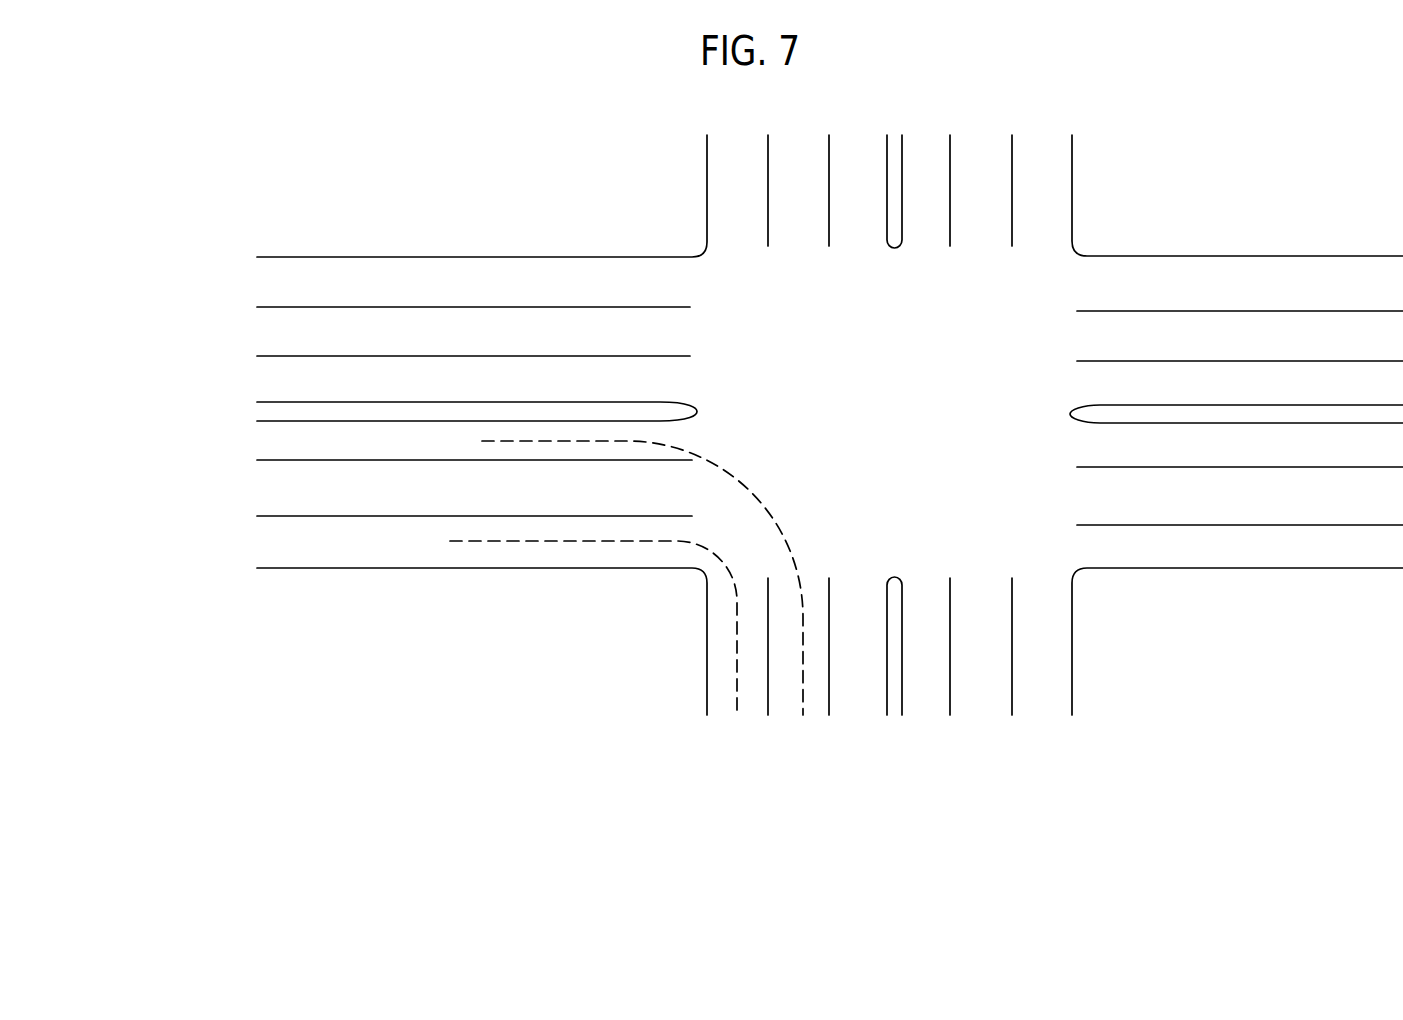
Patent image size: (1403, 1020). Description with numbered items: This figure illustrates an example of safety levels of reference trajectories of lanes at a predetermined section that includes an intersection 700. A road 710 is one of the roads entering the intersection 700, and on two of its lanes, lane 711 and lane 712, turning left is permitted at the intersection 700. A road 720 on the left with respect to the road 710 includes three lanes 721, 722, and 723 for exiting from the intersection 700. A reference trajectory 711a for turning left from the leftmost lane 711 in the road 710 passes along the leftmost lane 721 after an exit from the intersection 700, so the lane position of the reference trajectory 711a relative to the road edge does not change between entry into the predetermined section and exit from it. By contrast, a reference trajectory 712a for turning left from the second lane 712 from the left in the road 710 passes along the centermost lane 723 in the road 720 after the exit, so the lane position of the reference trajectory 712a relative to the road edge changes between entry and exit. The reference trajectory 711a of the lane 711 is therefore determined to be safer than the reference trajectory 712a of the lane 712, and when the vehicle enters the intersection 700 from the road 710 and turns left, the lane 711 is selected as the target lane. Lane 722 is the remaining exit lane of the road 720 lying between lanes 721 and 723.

The intersection 700 is at (899, 387).
The road 710 is at (887, 667).
The lane 711 is at (765, 733).
The lane 712 is at (828, 733).
The reference trajectory 711a is at (637, 542).
The reference trajectory 712a is at (538, 442).
The road 720 is at (390, 482).
The lane 721 is at (433, 616).
The lane 722 is at (244, 461).
The lane 723 is at (244, 406).